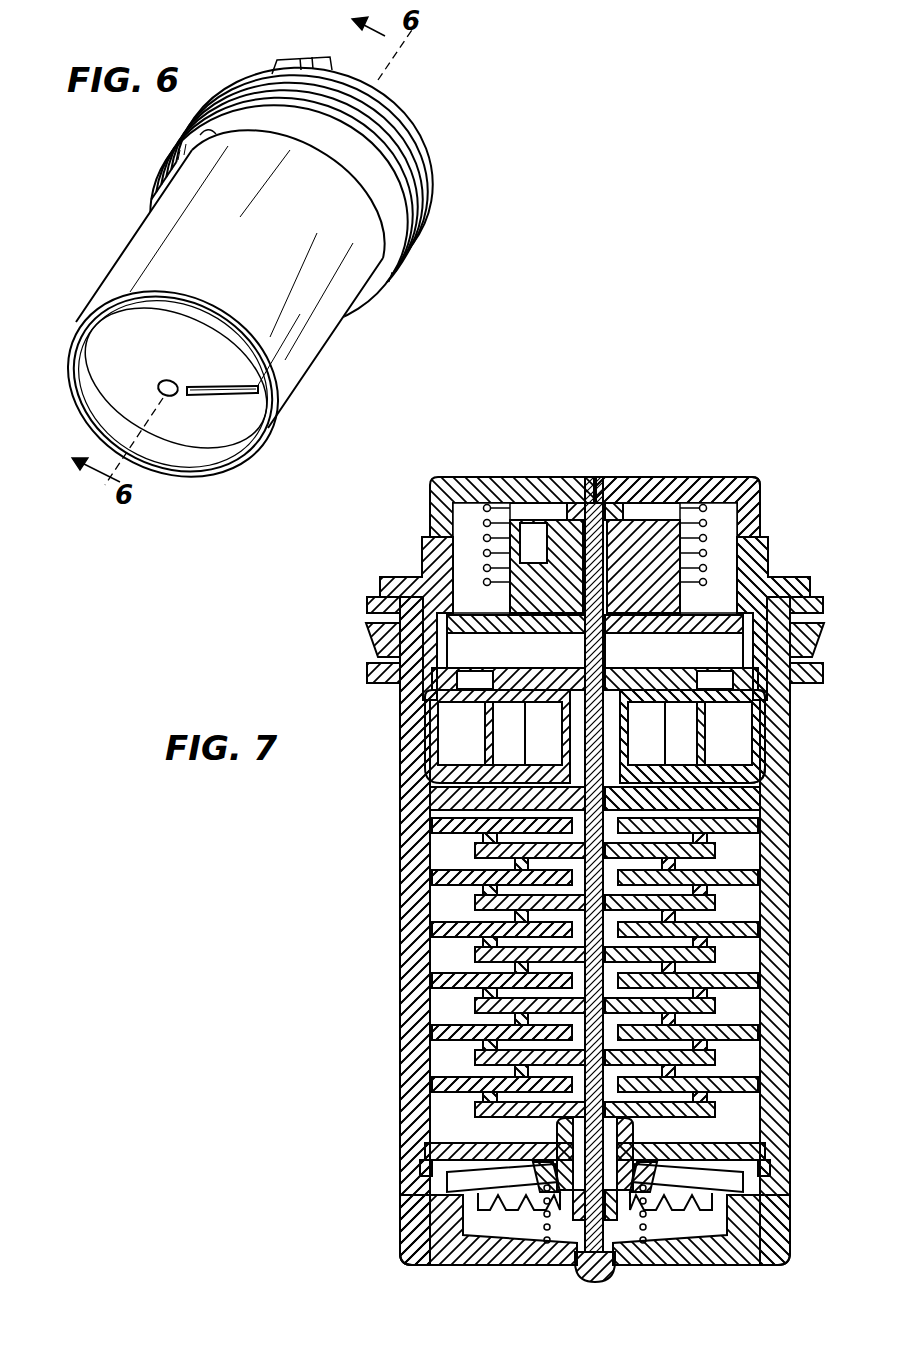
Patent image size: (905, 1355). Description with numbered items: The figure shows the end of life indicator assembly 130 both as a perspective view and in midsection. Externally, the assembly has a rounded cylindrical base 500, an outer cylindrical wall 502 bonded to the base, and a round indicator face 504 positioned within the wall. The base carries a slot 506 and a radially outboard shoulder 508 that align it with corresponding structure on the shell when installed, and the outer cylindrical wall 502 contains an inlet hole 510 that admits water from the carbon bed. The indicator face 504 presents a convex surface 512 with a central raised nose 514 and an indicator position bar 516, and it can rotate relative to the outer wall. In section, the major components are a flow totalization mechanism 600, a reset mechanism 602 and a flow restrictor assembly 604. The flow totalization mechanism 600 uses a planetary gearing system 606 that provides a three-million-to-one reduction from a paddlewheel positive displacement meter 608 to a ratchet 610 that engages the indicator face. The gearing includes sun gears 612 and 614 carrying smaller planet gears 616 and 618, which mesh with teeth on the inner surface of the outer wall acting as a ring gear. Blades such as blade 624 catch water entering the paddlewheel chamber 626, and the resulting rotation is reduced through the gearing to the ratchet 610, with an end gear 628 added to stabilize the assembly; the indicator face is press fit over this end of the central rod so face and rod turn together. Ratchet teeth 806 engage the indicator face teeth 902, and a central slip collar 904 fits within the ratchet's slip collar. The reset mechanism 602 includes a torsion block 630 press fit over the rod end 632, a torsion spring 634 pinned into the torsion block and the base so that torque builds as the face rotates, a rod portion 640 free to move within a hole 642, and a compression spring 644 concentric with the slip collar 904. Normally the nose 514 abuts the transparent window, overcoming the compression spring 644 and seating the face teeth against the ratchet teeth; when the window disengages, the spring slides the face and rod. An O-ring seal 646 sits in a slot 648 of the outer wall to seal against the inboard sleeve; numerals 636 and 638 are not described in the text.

In FIG. 7, the end of life indicator assembly 130 is at (336, 810).
In FIG. 6, the base 500 is at (287, 62).
In FIG. 7, the base 500 is at (428, 550).
In FIG. 6, the outer cylindrical wall 502 is at (173, 201).
In FIG. 7, the outer cylindrical wall 502 is at (405, 1020).
In FIG. 6, the indicator face 504 is at (120, 375).
In FIG. 7, the indicator face 504 is at (480, 1257).
In FIG. 6, the slot 506 is at (326, 58).
In FIG. 7, the slot 506 is at (437, 487).
In FIG. 6, the radially outboard shoulder 508 is at (422, 185).
In FIG. 6, the inlet hole 510 is at (206, 128).
In FIG. 6, the convex surface 512 is at (176, 378).
In FIG. 6, the central raised nose 514 is at (163, 380).
In FIG. 7, the central raised nose 514 is at (600, 1282).
In FIG. 6, the indicator position bar 516 is at (222, 387).
In FIG. 7, the flow totalization mechanism 600 is at (457, 845).
In FIG. 7, the reset mechanism 602 is at (590, 478).
In FIG. 7, the flow restrictor assembly 604 is at (723, 613).
In FIG. 7, the planetary gearing system 606 is at (740, 853).
In FIG. 7, the paddlewheel positive displacement meter 608 is at (745, 735).
In FIG. 7, the ratchet 610 is at (770, 1177).
In FIG. 7, the sun gear 612 is at (765, 880).
In FIG. 7, the sun gear 614 is at (715, 1005).
In FIG. 7, the planet gear 616 is at (745, 950).
In FIG. 7, the planet gear 618 is at (445, 945).
In FIG. 7, the blade 624 is at (460, 745).
In FIG. 7, the paddlewheel chamber 626 is at (417, 685).
In FIG. 7, the end gear 628 is at (712, 1140).
In FIG. 7, the torsion block 630 is at (630, 530).
In FIG. 7, the end of central rod 632 is at (548, 540).
In FIG. 7, the torsion spring 634 is at (705, 523).
In FIG. 7, the housing wall 636 is at (708, 593).
In FIG. 7, the cap wall 638 is at (705, 477).
In FIG. 7, the portion of central rod 640 is at (622, 530).
In FIG. 7, the hole 642 is at (567, 513).
In FIG. 7, the compression spring 644 is at (645, 1227).
In FIG. 7, the O-ring seal 646 is at (367, 648).
In FIG. 7, the slot 648 is at (365, 618).
In FIG. 7, the ratchet tooth 806 is at (452, 1195).
In FIG. 7, the indicator face teeth 902 is at (760, 1197).
In FIG. 7, the central slip collar 904 is at (607, 1233).